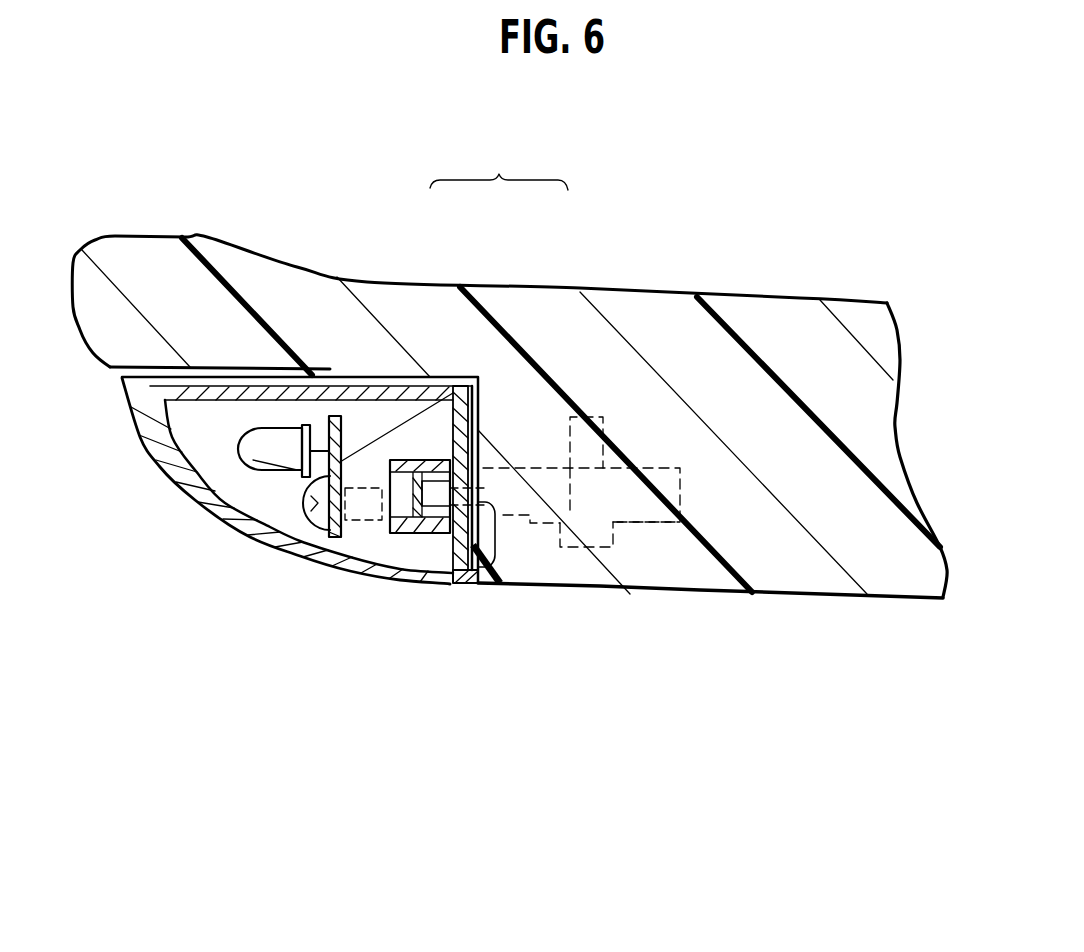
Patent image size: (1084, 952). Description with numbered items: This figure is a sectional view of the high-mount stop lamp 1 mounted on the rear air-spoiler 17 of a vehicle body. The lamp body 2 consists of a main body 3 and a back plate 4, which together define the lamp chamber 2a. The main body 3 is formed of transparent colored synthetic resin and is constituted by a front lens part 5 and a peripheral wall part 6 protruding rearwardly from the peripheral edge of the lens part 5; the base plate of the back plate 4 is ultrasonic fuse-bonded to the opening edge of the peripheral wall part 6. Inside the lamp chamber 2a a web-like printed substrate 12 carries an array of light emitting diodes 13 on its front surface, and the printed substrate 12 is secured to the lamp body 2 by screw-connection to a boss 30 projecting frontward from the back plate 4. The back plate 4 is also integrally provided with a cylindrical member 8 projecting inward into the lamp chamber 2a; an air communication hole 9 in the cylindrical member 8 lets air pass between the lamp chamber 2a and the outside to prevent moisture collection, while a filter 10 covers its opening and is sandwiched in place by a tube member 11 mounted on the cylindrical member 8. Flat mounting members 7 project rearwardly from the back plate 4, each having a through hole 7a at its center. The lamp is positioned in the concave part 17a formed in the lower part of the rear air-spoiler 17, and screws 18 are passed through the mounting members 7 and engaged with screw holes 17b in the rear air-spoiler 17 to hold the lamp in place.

The high-mount stop lamp 1 is at (160, 552).
The lamp body 2 is at (499, 164).
The lamp chamber 2a is at (233, 440).
The main body 3 is at (398, 377).
The back plate 4 is at (478, 434).
The lens part 5 is at (160, 455).
The peripheral wall part 6 is at (270, 550).
The mounting members 7 is at (528, 522).
The through hole 7a is at (630, 523).
The cylindrical member 8 is at (490, 585).
The air communication hole 9 is at (480, 467).
The filter 10 is at (375, 533).
The tube member 11 is at (422, 524).
The printed substrate 12 is at (330, 540).
The light emitting diodes 13 is at (252, 478).
The rear air-spoiler 17 is at (208, 237).
The concave part 17a is at (423, 577).
The screw holes 17b is at (605, 418).
The screws 18 is at (578, 547).
The boss 30 is at (365, 540).